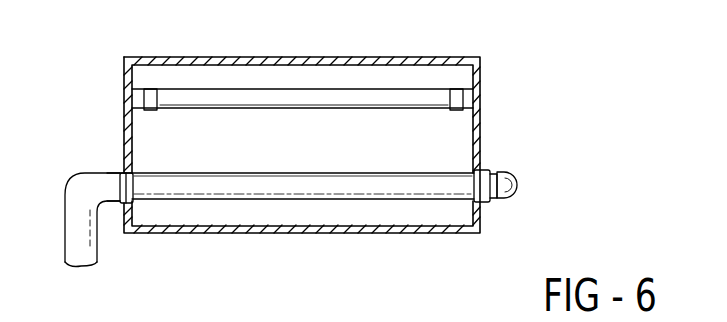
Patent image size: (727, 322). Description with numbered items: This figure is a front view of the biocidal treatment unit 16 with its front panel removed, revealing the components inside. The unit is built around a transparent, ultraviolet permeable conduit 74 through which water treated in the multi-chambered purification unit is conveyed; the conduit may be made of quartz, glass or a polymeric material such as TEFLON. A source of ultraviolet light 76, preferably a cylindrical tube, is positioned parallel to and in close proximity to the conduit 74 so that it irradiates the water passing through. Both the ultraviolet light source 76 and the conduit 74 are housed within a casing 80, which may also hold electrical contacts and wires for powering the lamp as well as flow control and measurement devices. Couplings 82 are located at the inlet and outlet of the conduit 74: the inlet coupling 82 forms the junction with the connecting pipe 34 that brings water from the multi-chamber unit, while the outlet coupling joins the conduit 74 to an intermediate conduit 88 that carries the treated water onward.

The biocidal treatment unit 16 is at (391, 32).
The connecting pipe 34 is at (72, 212).
The ultraviolet permeable conduit 74 is at (383, 199).
The source of ultraviolet light 76 is at (426, 88).
The casing 80 is at (207, 234).
The coupling 82 is at (125, 171).
The intermediate conduit 88 is at (504, 172).